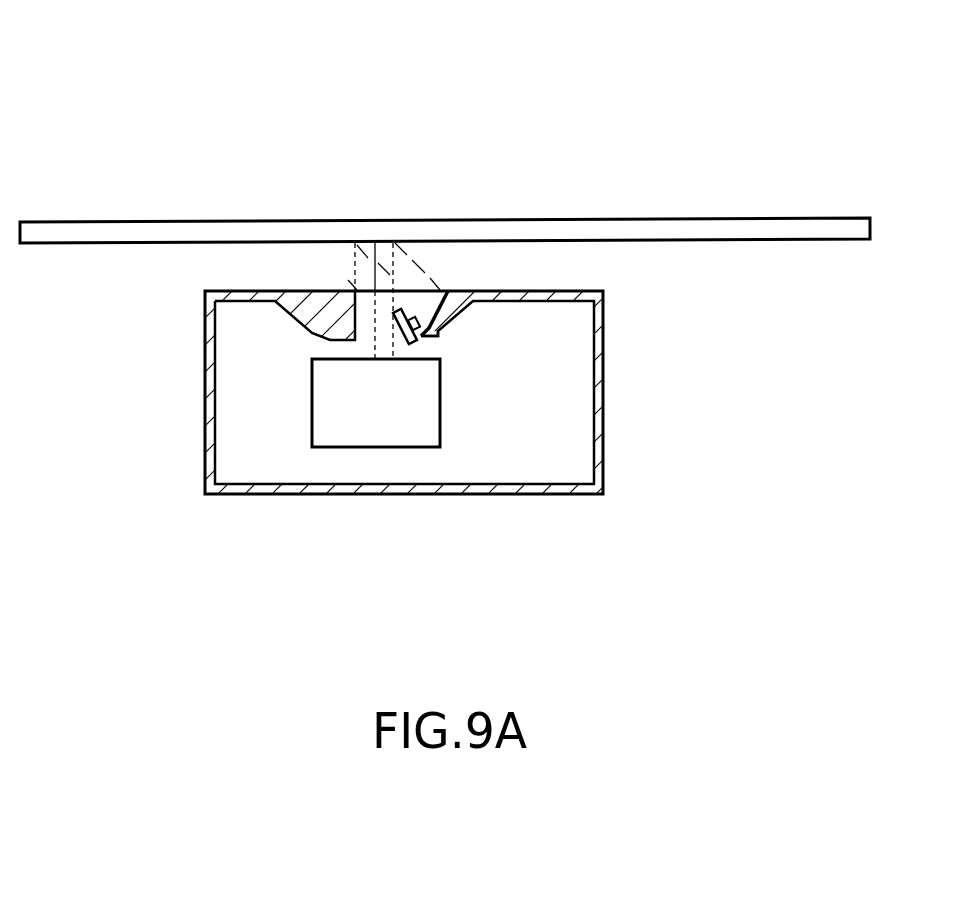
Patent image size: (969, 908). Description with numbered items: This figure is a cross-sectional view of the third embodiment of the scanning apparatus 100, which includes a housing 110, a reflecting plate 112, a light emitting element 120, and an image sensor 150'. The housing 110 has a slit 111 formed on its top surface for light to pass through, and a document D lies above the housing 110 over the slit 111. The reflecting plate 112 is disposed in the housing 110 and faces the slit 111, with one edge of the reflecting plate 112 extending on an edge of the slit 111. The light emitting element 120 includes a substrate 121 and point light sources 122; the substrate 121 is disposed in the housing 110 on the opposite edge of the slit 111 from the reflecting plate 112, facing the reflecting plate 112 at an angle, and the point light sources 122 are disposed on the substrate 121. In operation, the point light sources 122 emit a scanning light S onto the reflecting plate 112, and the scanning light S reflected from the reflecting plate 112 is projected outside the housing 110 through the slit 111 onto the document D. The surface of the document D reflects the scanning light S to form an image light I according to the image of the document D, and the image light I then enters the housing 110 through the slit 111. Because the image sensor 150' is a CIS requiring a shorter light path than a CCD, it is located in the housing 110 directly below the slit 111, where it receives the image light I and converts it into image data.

The scanning apparatus 100 is at (182, 39).
The housing 110 is at (597, 415).
The slit 111 is at (353, 285).
The reflecting plate 112 is at (449, 296).
The light emitting element 120 is at (456, 228).
The substrate 121 is at (400, 313).
The point light sources 122 is at (417, 320).
The image sensor 150' is at (420, 403).
The document D is at (778, 222).
The scanning light S is at (394, 266).
The image light I is at (382, 339).